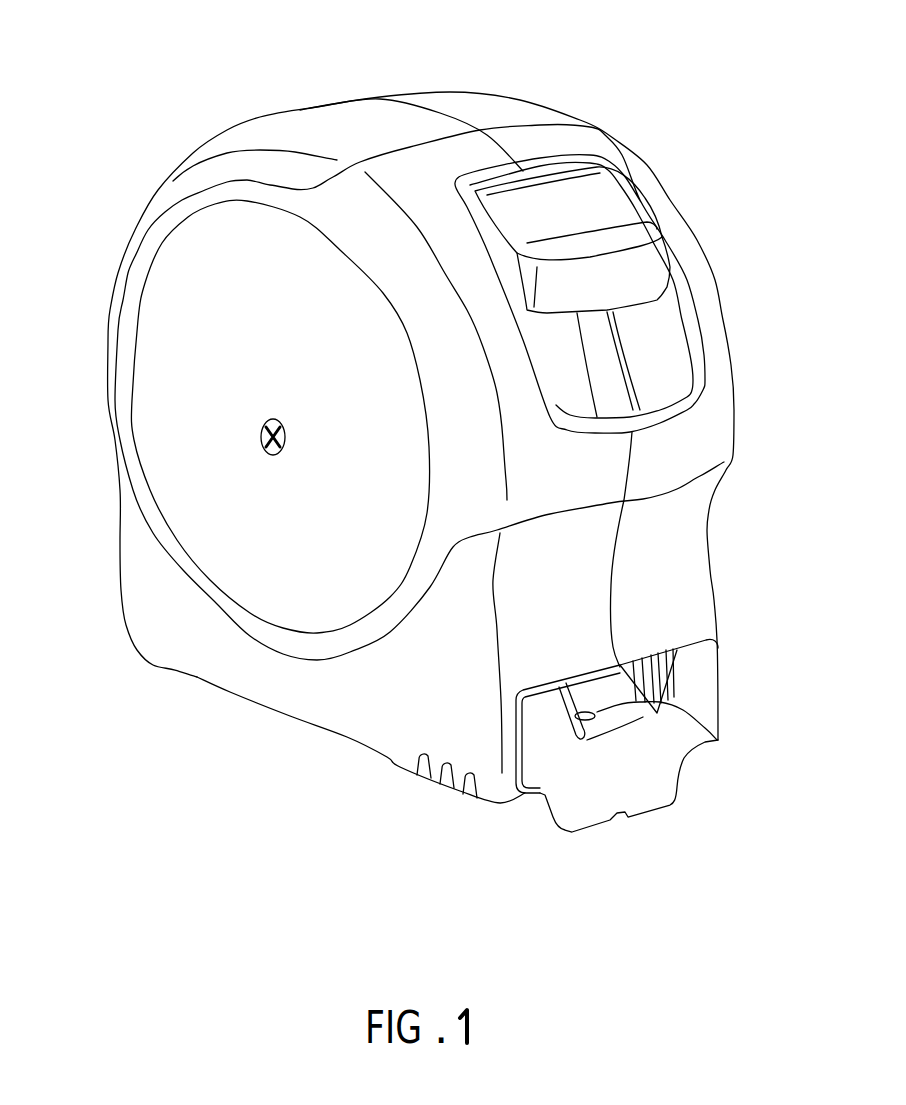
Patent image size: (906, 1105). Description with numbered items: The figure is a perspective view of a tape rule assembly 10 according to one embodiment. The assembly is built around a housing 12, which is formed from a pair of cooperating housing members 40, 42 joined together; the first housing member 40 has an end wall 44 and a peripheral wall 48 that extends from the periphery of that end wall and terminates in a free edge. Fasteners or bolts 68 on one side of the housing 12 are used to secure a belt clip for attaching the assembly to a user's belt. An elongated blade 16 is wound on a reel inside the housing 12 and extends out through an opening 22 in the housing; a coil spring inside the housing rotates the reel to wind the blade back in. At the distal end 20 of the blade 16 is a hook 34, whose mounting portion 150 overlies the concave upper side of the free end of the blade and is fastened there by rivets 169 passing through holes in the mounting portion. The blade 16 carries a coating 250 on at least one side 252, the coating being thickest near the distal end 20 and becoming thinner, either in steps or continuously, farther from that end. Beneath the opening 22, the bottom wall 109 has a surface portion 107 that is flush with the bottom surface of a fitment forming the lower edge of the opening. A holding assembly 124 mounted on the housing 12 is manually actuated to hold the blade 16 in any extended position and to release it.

The tape rule assembly 10 is at (124, 107).
The housing 12 is at (534, 96).
The elongated blade 16 is at (718, 740).
The distal end 20 is at (650, 705).
The opening 22 is at (683, 661).
The hook 34 is at (670, 773).
The housing member 40 is at (332, 128).
The housing member 42 is at (564, 110).
The end wall 44 is at (162, 278).
The peripheral wall 48 is at (373, 120).
The fasteners or bolts 68 is at (286, 440).
The surface portion 107 is at (446, 788).
The bottom wall 109 is at (348, 741).
The holding assembly 124 is at (614, 162).
The mounting portion 150 is at (598, 710).
The rivets 169 is at (577, 713).
The coating 250 is at (595, 687).
The side 252 is at (667, 657).